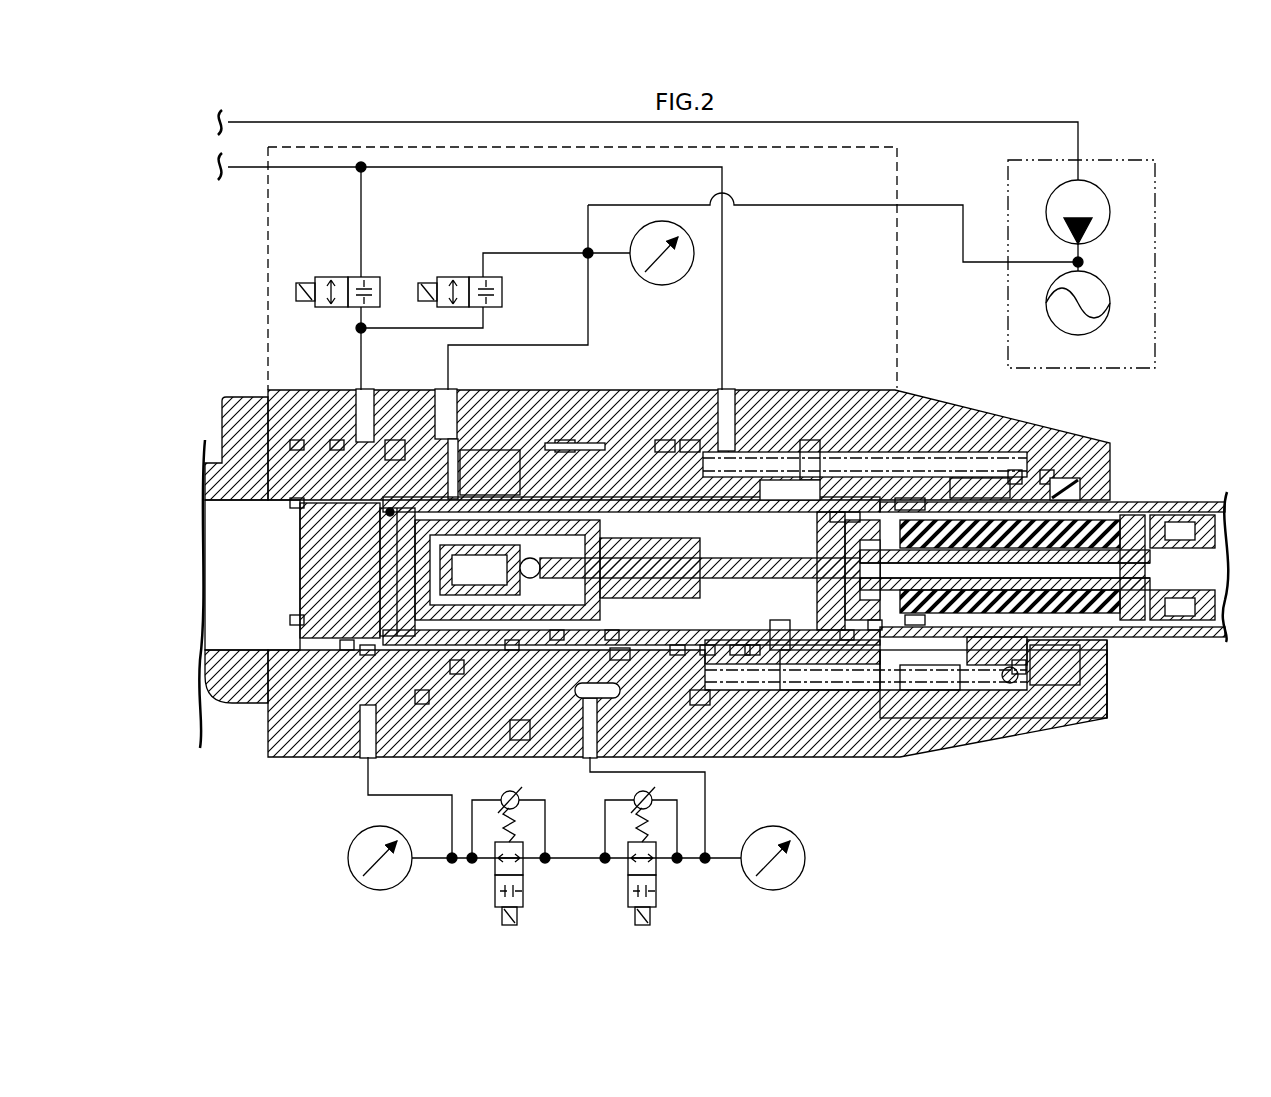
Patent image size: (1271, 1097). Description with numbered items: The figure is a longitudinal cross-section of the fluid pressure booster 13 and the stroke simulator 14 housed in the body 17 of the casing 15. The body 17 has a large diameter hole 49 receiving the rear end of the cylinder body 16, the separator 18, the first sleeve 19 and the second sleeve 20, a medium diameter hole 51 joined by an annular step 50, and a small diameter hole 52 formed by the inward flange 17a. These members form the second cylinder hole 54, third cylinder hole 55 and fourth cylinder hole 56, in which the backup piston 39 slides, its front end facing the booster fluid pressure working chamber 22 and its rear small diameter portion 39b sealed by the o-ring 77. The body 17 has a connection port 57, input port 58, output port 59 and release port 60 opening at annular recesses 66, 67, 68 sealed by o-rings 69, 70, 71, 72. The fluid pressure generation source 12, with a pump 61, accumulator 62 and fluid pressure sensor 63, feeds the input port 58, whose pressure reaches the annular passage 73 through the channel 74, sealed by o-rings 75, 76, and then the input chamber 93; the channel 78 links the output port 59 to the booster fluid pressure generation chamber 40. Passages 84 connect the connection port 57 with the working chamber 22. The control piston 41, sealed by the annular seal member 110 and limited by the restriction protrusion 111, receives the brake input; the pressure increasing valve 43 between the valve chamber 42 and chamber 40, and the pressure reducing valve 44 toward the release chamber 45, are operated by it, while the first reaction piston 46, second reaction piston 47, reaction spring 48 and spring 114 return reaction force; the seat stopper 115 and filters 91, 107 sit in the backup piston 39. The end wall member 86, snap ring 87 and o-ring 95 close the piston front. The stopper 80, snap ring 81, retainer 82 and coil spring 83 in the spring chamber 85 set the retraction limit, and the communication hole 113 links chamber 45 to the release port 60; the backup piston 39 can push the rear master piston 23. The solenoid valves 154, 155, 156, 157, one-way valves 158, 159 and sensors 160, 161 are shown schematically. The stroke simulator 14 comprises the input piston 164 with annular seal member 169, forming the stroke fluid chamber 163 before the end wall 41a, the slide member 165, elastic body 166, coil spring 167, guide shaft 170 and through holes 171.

The fluid pressure generation source 12 is at (1156, 236).
The fluid pressure booster 13 is at (800, 690).
The stroke simulator 14 is at (1148, 500).
The casing 15 is at (300, 760).
The cylinder body 16 is at (228, 688).
The body 17 is at (900, 758).
The inward flange 17a is at (1110, 665).
The separator 18 is at (375, 745).
The first sleeve 19 is at (520, 740).
The second sleeve 20 is at (700, 705).
The booster fluid pressure working chamber 22 is at (300, 620).
The rear master piston 23 is at (300, 505).
The backup piston 39 is at (818, 392).
The rear small diameter portion 39b is at (880, 454).
The booster fluid pressure generation chamber 40 is at (750, 392).
The control piston 41 is at (940, 400).
The end wall 41a is at (905, 508).
The valve chamber 42 is at (555, 640).
The pressure increasing valve 43 is at (525, 550).
The pressure reducing valve 44 is at (740, 655).
The release chamber 45 is at (790, 495).
The first reaction piston 46 is at (750, 655).
The second reaction piston 47 is at (808, 488).
The reaction spring 48 is at (385, 620).
The large diameter hole 49 is at (532, 392).
The annular step 50 is at (687, 392).
The medium diameter hole 51 is at (976, 400).
The small diameter hole 52 is at (1090, 500).
The second cylinder hole 54 is at (352, 650).
The third cylinder hole 55 is at (510, 645).
The fourth cylinder hole 56 is at (778, 650).
The connection port 57 is at (358, 392).
The input port 58 is at (444, 392).
The output port 59 is at (590, 762).
The release port 60 is at (730, 395).
The pump 61 is at (1110, 205).
The accumulator 62 is at (1110, 300).
The fluid pressure sensor 63 is at (640, 275).
The annular recess 66 is at (334, 392).
The annular recess 67 is at (490, 472).
The annular recess 68 is at (620, 655).
The o-ring 69 is at (300, 392).
The o-ring 70 is at (400, 392).
The o-ring 71 is at (562, 392).
The o-ring 72 is at (662, 392).
The annular passage 73 is at (558, 442).
The channel 74 is at (458, 392).
The o-ring 75 is at (420, 700).
The o-ring 76 is at (680, 650).
The o-ring 77 is at (773, 392).
The channel 78 is at (705, 655).
The stopper 80 is at (1005, 682).
The snap ring 81 is at (975, 668).
The retainer 82 is at (1018, 675).
The coil spring 83 is at (1013, 440).
The passages 84 is at (368, 650).
The spring chamber 85 is at (945, 692).
The end wall member 86 is at (305, 585).
The snap ring 87 is at (383, 510).
The filter 91 is at (380, 570).
The input chamber 93 is at (395, 550).
The o-ring 95 is at (455, 670).
The filter 107 is at (612, 640).
The annular seal member 110 is at (1068, 445).
The restriction protrusion 111 is at (1040, 665).
The communication hole 113 is at (1047, 440).
The spring 114 is at (612, 495).
The seat stopper 115 is at (845, 638).
The automatic brake pressurizing linear solenoid valve 154 is at (447, 277).
The regenerative cooperative pressure reducing linear solenoid valve 155 is at (325, 277).
The automatic brake pressure reducing linear solenoid valve 156 is at (628, 880).
The regenerative cooperative pressurizing linear solenoid valve 157 is at (495, 882).
The first one-way valve 158 is at (651, 797).
The second one-way valve 159 is at (516, 795).
The brake operation amount detecting fluid pressure sensor 160 is at (806, 858).
The automatic brake feedback control fluid pressure sensor 161 is at (403, 880).
The stroke fluid chamber 163 is at (1115, 450).
The input piston 164 is at (1228, 502).
The slide member 165 is at (915, 630).
The elastic body 166 is at (1110, 622).
The coil spring 167 is at (875, 628).
The annular seal member 169 is at (1188, 515).
The guide shaft 170 is at (1150, 560).
The through holes 171 is at (848, 512).